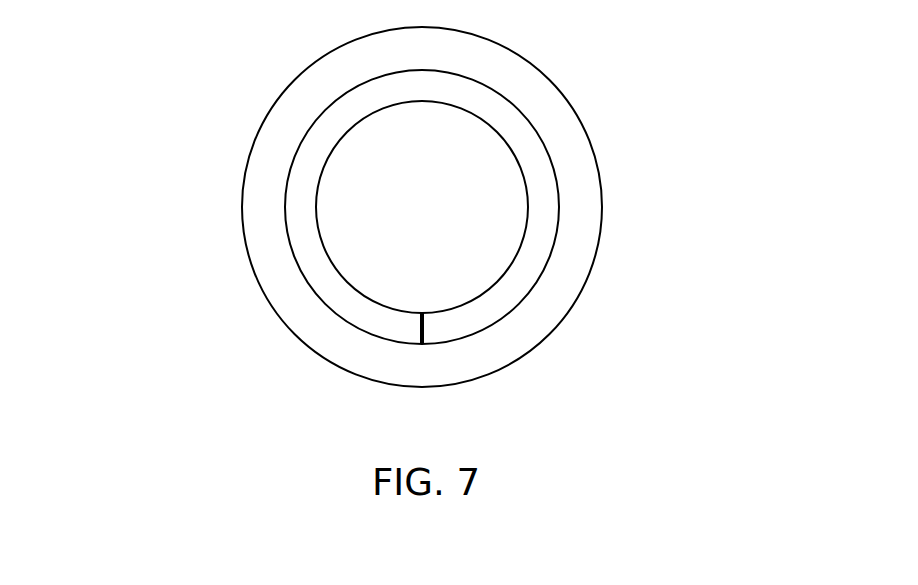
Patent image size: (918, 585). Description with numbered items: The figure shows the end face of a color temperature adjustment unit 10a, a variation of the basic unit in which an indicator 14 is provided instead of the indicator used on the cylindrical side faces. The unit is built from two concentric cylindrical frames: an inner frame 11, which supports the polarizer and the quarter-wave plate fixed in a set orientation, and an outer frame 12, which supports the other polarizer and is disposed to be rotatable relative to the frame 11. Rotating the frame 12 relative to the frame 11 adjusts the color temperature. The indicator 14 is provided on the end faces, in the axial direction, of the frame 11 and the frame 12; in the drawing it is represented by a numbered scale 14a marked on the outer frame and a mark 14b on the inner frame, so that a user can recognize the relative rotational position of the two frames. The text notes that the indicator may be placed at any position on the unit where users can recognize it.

The color temperature adjustment unit 10a is at (803, 70).
The frame 11 is at (528, 142).
The frame 12 is at (278, 118).
The indicator 14 is at (168, 323).
The scale numerals 14a is at (307, 383).
The indicator mark 14b is at (382, 316).